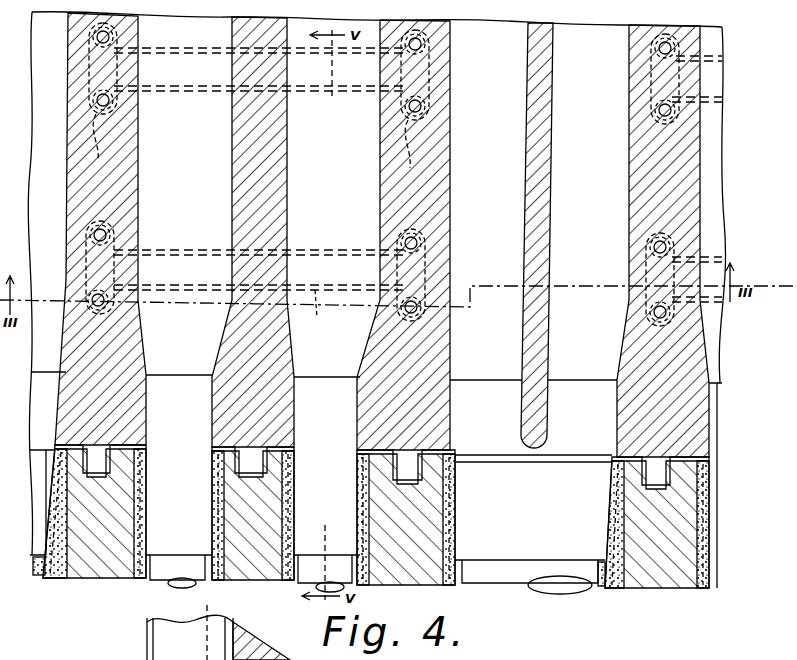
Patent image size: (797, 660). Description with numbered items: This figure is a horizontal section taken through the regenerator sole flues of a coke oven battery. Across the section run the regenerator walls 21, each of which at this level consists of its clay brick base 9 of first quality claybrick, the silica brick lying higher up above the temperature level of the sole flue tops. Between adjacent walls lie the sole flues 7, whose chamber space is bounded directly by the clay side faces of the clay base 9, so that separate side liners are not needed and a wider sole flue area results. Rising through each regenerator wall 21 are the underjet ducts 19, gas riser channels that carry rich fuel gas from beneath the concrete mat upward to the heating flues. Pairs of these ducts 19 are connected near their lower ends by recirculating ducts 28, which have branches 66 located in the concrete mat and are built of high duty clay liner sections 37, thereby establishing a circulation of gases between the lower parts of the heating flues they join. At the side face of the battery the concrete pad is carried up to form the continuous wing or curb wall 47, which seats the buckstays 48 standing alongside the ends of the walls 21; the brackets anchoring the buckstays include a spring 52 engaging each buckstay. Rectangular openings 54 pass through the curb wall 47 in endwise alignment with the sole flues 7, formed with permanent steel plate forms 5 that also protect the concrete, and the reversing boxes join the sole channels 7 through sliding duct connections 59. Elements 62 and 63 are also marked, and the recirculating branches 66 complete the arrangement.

The permanent steel plate form 5 is at (202, 518).
The sole flue 7 is at (381, 263).
The clay brick base 9 is at (148, 346).
The duct 19 is at (108, 40).
The regenerator wall 21 is at (440, 190).
The recirculating duct 28 is at (308, 75).
The clay liner section 37 is at (315, 316).
The wing or curb wall 47 is at (243, 492).
The buckstay 48 is at (147, 650).
The spring 52 is at (190, 637).
The rectangular opening 54 is at (177, 462).
The sliding duct connection 59 is at (598, 580).
The sleeve 62 is at (234, 612).
The axis line 63 is at (207, 608).
The branch 66 is at (382, 174).